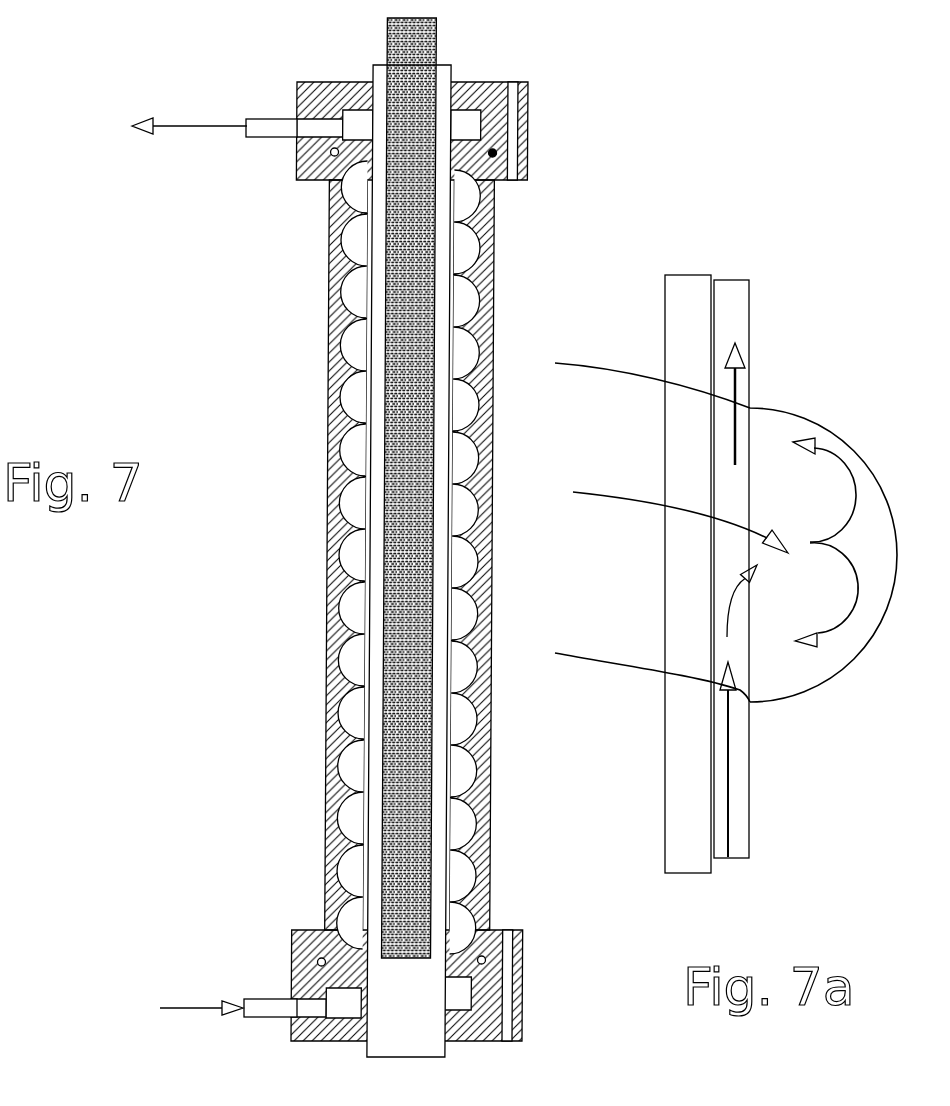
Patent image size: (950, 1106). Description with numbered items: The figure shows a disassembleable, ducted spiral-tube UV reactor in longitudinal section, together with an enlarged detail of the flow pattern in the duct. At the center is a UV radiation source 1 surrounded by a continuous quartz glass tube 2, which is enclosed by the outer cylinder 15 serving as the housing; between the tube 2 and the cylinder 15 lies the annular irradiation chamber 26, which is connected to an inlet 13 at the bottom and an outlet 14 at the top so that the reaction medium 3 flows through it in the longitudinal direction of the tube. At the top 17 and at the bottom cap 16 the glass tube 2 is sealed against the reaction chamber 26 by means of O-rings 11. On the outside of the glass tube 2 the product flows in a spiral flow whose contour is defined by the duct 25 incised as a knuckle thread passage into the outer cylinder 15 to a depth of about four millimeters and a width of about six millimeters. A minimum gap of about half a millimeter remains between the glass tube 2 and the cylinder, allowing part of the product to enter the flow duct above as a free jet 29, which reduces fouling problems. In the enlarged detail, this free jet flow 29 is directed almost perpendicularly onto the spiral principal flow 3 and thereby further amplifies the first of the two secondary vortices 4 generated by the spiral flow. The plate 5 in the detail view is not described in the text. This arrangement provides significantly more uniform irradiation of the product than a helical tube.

In FIG. 7, the UV radiation source 1 is at (438, 50).
In FIG. 7, the quartz glass tube 2 is at (452, 70).
In FIG. 7a, the reaction medium 3 is at (618, 497).
In FIG. 7a, the secondary vortices 4 is at (837, 462).
In FIG. 7a, the plate 5 is at (707, 548).
In FIG. 7, the O-rings 11 is at (340, 80).
In FIG. 7, the inlet 13 is at (268, 1002).
In FIG. 7, the outlet 14 is at (280, 122).
In FIG. 7, the outer cylinder 15 is at (490, 246).
In FIG. 7, the bottom cap 16 is at (490, 1003).
In FIG. 7, the top 17 is at (485, 97).
In FIG. 7, the duct 25 is at (485, 298).
In FIG. 7, the irradiation chamber 26 is at (355, 553).
In FIG. 7a, the irradiation chamber 26 is at (775, 450).
In FIG. 7a, the free jet 29 is at (730, 739).